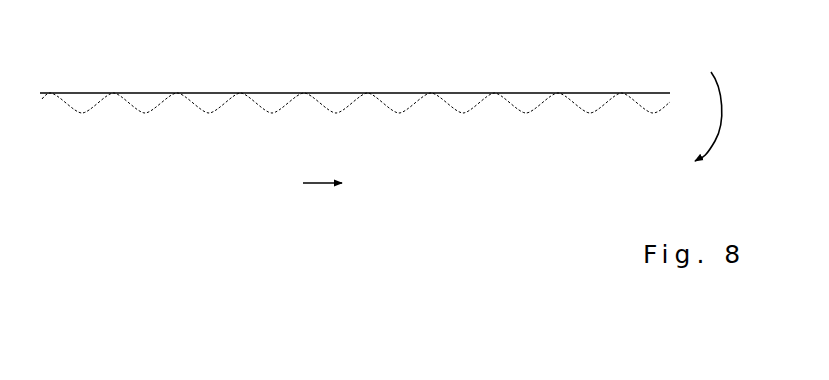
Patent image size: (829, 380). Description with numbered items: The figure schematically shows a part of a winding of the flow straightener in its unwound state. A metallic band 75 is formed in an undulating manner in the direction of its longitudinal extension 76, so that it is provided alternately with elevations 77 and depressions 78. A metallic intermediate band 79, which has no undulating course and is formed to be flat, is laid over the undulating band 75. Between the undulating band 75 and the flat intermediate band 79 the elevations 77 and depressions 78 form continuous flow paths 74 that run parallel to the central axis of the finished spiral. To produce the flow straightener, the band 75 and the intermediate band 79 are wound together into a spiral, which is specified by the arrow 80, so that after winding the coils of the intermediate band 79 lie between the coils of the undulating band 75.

The flow paths 74 is at (215, 93).
The band 75 is at (87, 114).
The longitudinal extension 76 is at (316, 184).
The elevations 77 is at (176, 96).
The depressions 78 is at (212, 108).
The intermediate band 79 is at (343, 93).
The arrow 80 is at (722, 88).